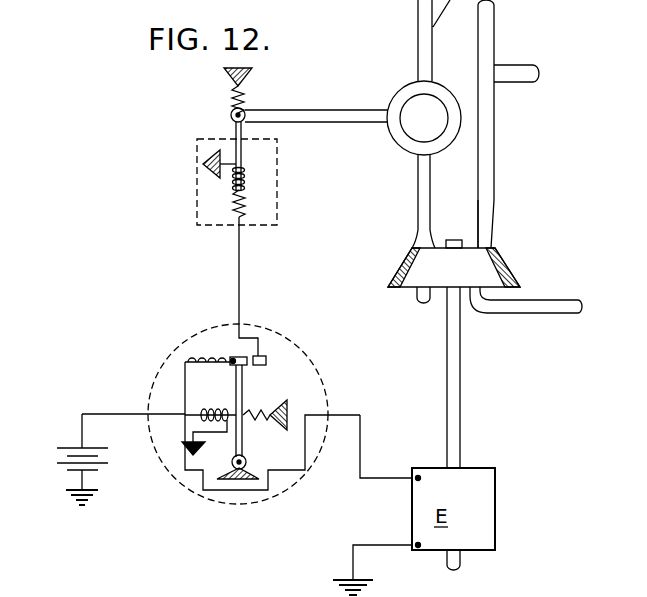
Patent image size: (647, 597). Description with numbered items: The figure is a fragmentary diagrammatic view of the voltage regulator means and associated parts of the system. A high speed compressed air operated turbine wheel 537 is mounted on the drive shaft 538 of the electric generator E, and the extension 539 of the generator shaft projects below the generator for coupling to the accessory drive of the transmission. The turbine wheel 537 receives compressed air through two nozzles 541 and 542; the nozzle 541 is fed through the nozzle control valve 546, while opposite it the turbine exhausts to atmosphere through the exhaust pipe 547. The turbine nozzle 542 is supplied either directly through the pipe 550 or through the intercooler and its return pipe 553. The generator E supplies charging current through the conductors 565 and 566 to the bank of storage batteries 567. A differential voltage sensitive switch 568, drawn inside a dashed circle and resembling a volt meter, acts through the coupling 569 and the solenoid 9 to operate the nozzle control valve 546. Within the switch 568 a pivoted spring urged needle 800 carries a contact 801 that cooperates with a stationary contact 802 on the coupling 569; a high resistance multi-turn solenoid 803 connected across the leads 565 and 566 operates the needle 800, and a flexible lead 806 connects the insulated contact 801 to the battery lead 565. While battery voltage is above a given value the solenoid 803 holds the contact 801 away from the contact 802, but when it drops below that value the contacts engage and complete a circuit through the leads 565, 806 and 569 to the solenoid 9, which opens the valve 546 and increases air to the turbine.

The solenoid 9 is at (245, 178).
The turbine wheel 537 is at (509, 270).
The drive shaft 538 is at (455, 425).
The extension of the generator shaft 539 is at (462, 560).
The nozzle 541 is at (418, 228).
The turbine nozzle 542 is at (490, 240).
The nozzle control valve 546 is at (410, 112).
The exhaust pipe 547 is at (415, 292).
The pipe 550 is at (491, 175).
The return pipe 553 is at (524, 70).
The conductor 565 is at (100, 414).
The conductor 566 is at (385, 448).
The storage batteries 567 is at (70, 472).
The differential voltage sensitive switch 568 is at (283, 333).
The coupling 569 is at (238, 248).
The needle 800 is at (243, 440).
The contact 801 is at (232, 358).
The stationary contact 802 is at (268, 361).
The multi-turn solenoid 803 is at (212, 408).
The flexible lead 806 is at (185, 385).